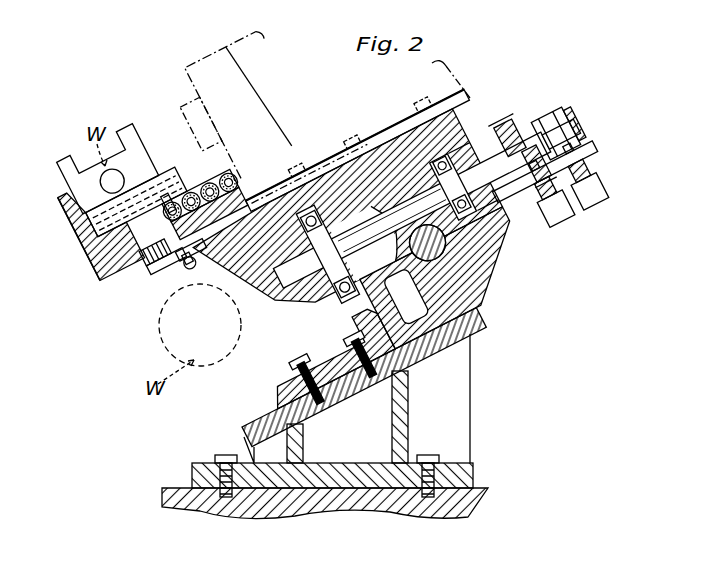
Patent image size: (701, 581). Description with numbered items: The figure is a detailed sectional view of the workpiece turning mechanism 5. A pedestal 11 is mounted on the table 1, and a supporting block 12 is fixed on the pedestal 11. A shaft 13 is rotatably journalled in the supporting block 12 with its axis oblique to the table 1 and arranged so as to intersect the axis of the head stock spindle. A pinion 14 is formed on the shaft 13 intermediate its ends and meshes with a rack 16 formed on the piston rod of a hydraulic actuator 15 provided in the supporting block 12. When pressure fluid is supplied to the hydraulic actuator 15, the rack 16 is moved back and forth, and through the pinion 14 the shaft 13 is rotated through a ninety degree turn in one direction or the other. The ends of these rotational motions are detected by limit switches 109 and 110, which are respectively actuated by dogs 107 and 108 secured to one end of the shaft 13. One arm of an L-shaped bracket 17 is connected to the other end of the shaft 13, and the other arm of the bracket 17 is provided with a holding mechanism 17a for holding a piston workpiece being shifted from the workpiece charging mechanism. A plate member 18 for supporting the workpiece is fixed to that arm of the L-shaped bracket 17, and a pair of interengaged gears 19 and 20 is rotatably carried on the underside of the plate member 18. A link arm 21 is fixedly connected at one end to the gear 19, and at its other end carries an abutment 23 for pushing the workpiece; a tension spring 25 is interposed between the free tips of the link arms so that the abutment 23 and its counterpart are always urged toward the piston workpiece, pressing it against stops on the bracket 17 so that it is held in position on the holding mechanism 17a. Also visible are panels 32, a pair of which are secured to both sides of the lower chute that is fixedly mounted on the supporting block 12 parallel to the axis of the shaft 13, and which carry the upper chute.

The table 1 is at (170, 488).
The workpiece turning mechanism 5 is at (265, 316).
The pedestal 11 is at (432, 334).
The supporting block 12 is at (393, 132).
The shaft 13 is at (322, 214).
The pinion 14 is at (452, 208).
The hydraulic actuator 15 is at (454, 252).
The rack 16 is at (413, 286).
The L-shaped bracket 17 is at (256, 197).
The holding mechanism 17a is at (63, 217).
The plate member 18 is at (98, 280).
The gear 19 is at (146, 272).
The gear 20 is at (232, 173).
The link arm 21 is at (189, 268).
The abutment 23 is at (176, 196).
The tension spring 25 is at (198, 262).
The panels 32 is at (262, 102).
The dog 107 is at (504, 125).
The dog 108 is at (549, 113).
The limit switch 109 is at (570, 227).
The limit switch 110 is at (600, 210).